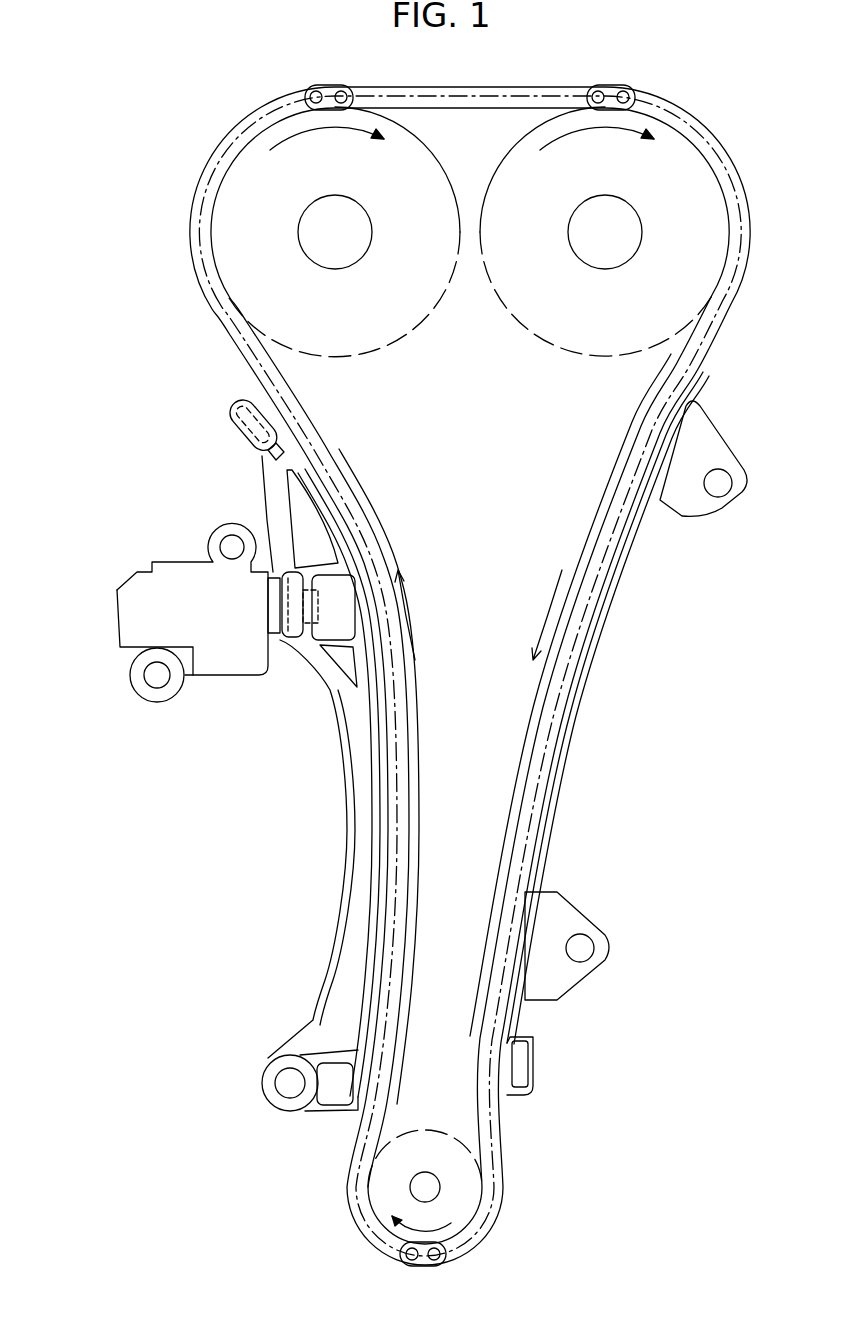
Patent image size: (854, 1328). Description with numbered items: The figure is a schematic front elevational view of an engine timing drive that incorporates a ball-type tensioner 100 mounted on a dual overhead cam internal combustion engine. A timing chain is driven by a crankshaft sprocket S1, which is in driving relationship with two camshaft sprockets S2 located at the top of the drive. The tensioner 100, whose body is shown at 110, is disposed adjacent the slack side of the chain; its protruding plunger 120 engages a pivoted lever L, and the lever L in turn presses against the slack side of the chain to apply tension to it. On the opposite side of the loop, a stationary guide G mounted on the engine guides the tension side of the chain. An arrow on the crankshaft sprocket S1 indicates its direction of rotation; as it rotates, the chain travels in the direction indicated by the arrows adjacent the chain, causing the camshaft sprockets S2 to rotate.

The ball-type tensioner 100 is at (176, 581).
The tensioner body 110 is at (117, 620).
The plunger 120 is at (277, 560).
The pivoted lever L is at (337, 859).
The stationary guide G is at (606, 669).
The crankshaft sprocket S1 is at (430, 1130).
The camshaft sprockets S2 is at (372, 332).